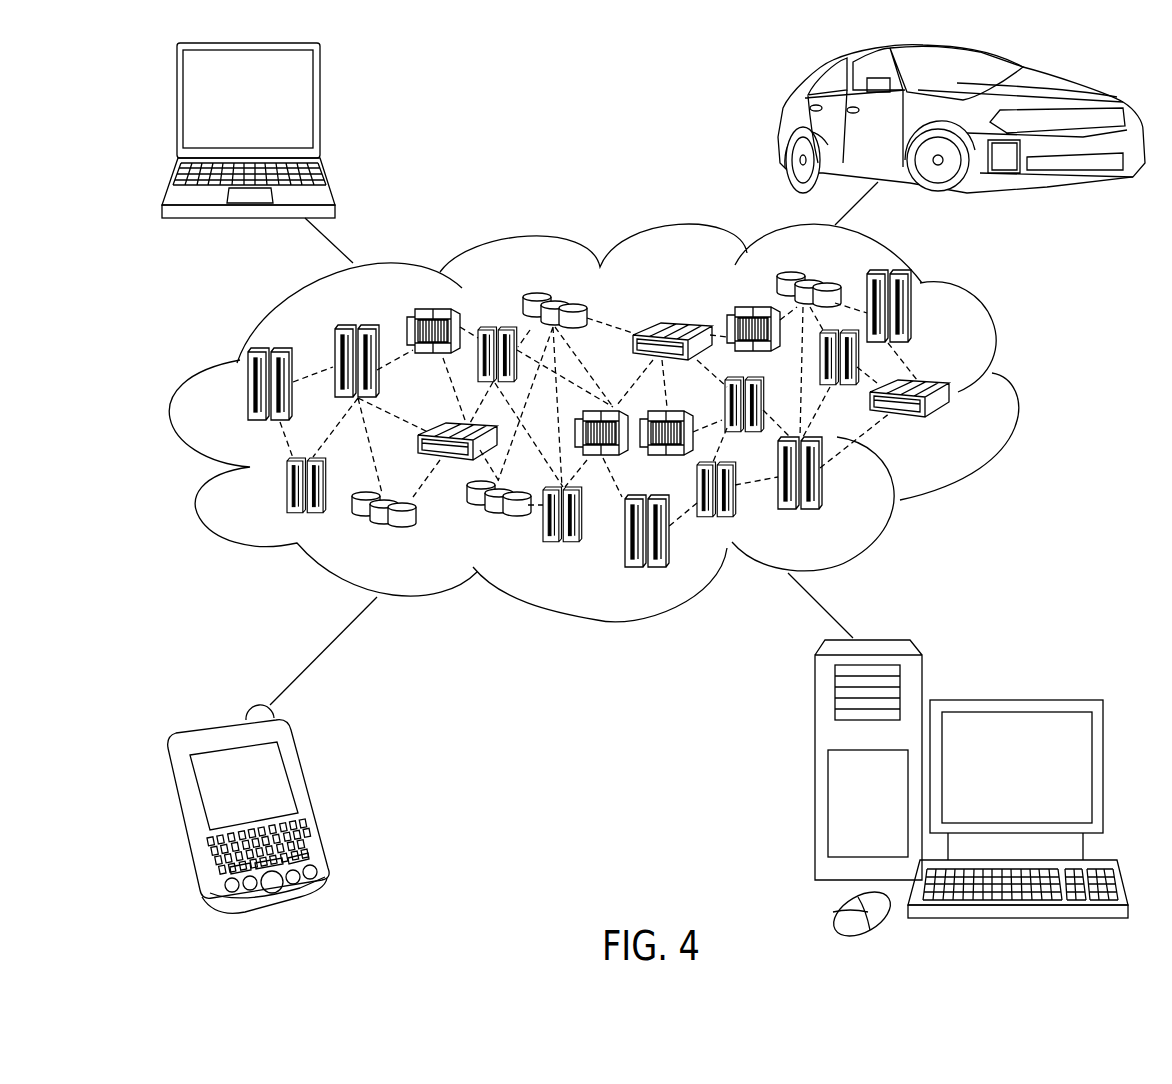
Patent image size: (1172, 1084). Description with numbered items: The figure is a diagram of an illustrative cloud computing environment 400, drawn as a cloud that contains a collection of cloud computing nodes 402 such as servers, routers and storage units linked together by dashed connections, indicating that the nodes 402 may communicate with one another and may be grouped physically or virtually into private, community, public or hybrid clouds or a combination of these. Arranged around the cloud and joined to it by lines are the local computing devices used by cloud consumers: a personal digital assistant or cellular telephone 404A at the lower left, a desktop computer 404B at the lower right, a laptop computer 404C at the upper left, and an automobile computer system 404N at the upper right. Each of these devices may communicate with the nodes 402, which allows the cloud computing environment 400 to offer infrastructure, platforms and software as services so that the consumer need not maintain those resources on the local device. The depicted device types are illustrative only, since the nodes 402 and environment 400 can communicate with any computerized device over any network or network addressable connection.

The cloud computing environment 400 is at (1013, 397).
The cloud computing nodes 402 is at (953, 428).
The personal digital assistant (PDA) or cellular telephone 404A is at (312, 800).
The desktop computer 404B is at (1013, 700).
The laptop computer 404C is at (322, 108).
The automobile computer system 404N is at (782, 128).